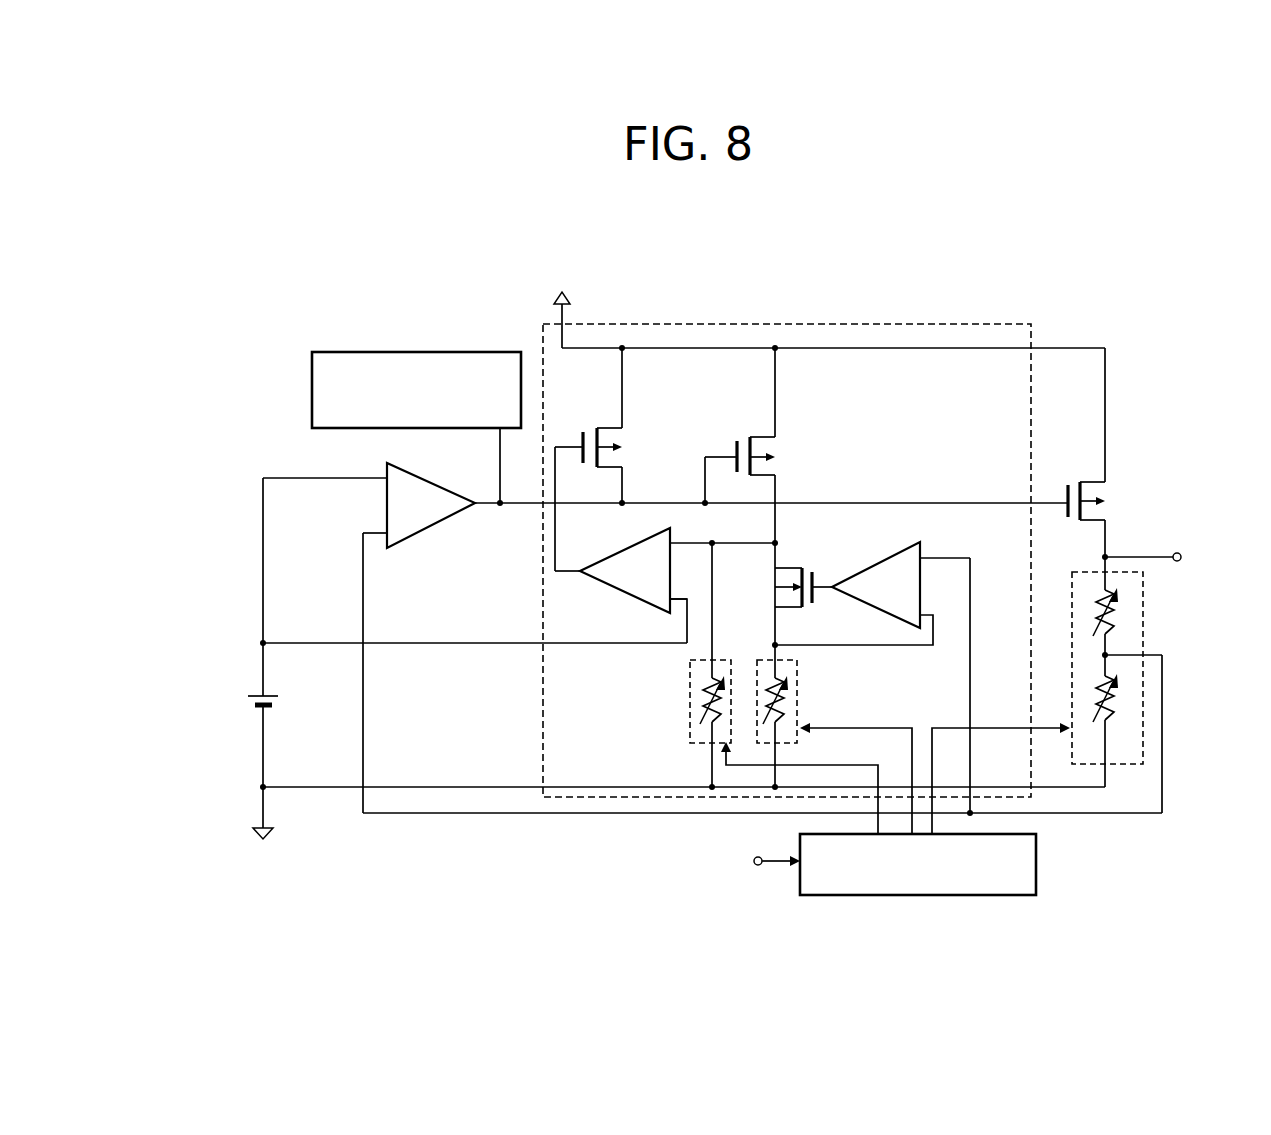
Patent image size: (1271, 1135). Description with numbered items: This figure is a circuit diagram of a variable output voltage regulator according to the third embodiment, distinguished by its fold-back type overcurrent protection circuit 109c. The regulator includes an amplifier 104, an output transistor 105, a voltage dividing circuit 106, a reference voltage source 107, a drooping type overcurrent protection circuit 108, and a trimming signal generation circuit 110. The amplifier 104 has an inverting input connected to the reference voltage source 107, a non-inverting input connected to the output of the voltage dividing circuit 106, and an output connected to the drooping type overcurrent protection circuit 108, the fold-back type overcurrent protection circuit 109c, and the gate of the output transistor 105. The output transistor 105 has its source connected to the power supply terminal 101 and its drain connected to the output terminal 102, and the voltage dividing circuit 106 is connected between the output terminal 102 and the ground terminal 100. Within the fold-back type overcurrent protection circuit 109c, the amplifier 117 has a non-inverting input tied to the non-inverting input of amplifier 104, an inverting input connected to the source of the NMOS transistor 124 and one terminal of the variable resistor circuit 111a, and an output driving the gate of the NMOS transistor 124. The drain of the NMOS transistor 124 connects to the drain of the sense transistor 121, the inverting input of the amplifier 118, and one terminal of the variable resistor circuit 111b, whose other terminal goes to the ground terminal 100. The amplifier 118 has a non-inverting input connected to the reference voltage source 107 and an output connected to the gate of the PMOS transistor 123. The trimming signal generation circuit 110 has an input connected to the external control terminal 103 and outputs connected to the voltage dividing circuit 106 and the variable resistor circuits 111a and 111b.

The ground terminal 100 is at (281, 853).
The power supply terminal 101 is at (592, 318).
The output terminal 102 is at (1155, 542).
The external control terminal 103 is at (747, 862).
The amplifier 104 is at (370, 537).
The output transistor 105 is at (1136, 452).
The voltage dividing circuit 106 is at (1145, 673).
The reference voltage source 107 is at (235, 653).
The drooping type overcurrent protection circuit 108 is at (416, 395).
The fold-back type overcurrent protection circuit 109c is at (746, 560).
The trimming signal generation circuit 110 is at (925, 809).
The variable resistor circuit 111a is at (827, 701).
The variable resistor circuit 111b is at (649, 714).
The amplifier 117 is at (882, 579).
The amplifier 118 is at (665, 583).
The sense transistor 121 is at (778, 425).
The PMOS transistor 123 is at (625, 425).
The NMOS transistor 124 is at (829, 560).